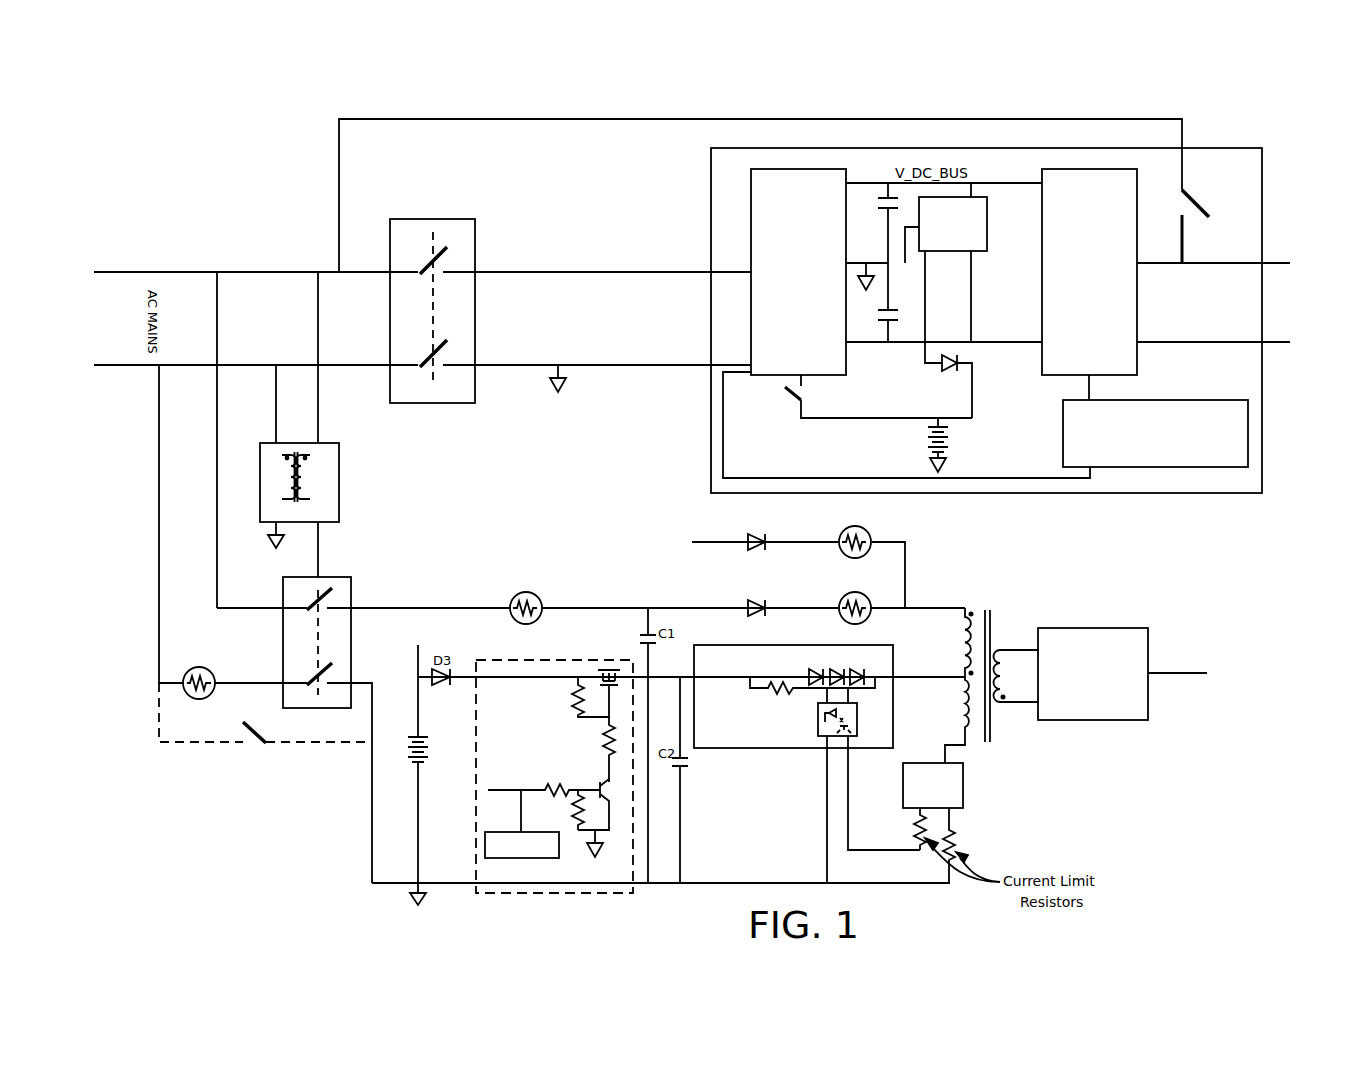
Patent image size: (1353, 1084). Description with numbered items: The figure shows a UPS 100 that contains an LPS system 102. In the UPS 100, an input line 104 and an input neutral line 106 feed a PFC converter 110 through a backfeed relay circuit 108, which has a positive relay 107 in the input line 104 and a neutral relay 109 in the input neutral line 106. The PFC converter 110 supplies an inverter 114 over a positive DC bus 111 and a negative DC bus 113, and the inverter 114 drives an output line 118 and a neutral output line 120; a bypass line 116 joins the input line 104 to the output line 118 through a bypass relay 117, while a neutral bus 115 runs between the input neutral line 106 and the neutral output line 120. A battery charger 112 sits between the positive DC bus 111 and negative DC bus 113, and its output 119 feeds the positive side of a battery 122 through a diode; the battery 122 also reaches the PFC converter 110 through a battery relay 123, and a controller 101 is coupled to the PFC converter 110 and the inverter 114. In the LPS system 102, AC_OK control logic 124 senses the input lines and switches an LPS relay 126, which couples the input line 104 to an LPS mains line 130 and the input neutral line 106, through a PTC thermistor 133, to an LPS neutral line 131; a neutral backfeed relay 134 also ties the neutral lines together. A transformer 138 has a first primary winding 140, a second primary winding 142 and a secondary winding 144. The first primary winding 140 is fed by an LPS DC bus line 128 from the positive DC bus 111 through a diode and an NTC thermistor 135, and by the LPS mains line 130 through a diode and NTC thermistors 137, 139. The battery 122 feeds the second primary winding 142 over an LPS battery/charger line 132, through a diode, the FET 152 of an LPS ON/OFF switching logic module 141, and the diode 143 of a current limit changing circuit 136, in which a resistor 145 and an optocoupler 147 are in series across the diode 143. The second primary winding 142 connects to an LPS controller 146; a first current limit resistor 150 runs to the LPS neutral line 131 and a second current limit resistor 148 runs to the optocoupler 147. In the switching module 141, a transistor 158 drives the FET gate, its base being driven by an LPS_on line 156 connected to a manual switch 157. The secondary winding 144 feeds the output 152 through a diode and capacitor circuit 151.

The UPS 100 is at (1170, 507).
The controller 101 is at (1190, 400).
The LPS system 102 is at (305, 808).
The input line 104 is at (298, 272).
The input neutral line 106 is at (298, 365).
The positive relay 107 is at (428, 266).
The backfeed relay circuit 108 is at (468, 233).
The neutral relay 109 is at (428, 359).
The PFC converter 110 is at (751, 205).
The positive DC bus 111 is at (880, 185).
The battery charger 112 is at (987, 215).
The negative DC bus 113 is at (1012, 341).
The inverter 114 is at (1137, 205).
The neutral bus 115 is at (866, 268).
The bypass line 116 is at (995, 119).
The bypass relay 117 is at (1210, 165).
The output line 118 is at (1268, 263).
The output of the battery charger 119 is at (926, 281).
The neutral output line 120 is at (1268, 342).
The battery 122 is at (950, 445).
The battery relay 123 is at (791, 398).
The AC_OK control logic 124 is at (330, 470).
The LPS relay 126 is at (343, 580).
The LPS DC bus line 128 is at (730, 543).
The LPS mains line 130 is at (498, 608).
The LPS neutral line 131 is at (450, 868).
The LPS battery/charger line 132 is at (462, 675).
The PTC thermistor 133 is at (213, 670).
The neutral backfeed relay 134 is at (245, 775).
The NTC thermistor 135 is at (868, 530).
The current limit changing circuit 136 is at (780, 652).
The NTC thermistor 137 is at (542, 598).
The transformer 138 is at (1012, 636).
The NTC thermistor 139 is at (838, 600).
The first primary winding 140 is at (968, 632).
The LPS ON/OFF switching logic module 141 is at (540, 668).
The second primary winding 142 is at (965, 725).
The diode 143 is at (868, 672).
The secondary winding 144 is at (998, 700).
The resistor 145 is at (770, 688).
The LPS controller 146 is at (963, 785).
The optocoupler 147 is at (848, 736).
The second current limit resistor 148 is at (915, 815).
The first current limit resistor 150 is at (952, 832).
The diode and capacitor circuit 151 is at (1093, 628).
The FET / output 152 is at (600, 668).
The LPS_on line 156 is at (538, 790).
The manual switch 157 is at (525, 858).
The transistor 158 is at (605, 772).